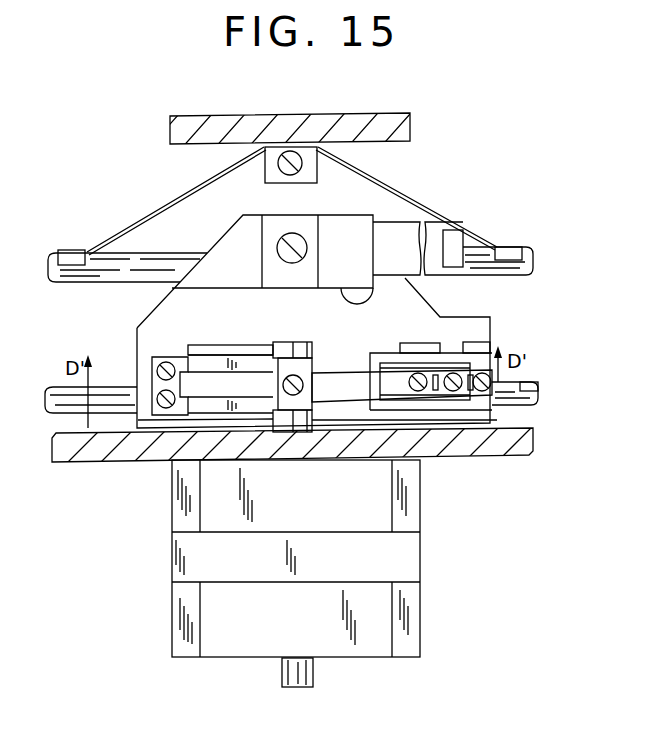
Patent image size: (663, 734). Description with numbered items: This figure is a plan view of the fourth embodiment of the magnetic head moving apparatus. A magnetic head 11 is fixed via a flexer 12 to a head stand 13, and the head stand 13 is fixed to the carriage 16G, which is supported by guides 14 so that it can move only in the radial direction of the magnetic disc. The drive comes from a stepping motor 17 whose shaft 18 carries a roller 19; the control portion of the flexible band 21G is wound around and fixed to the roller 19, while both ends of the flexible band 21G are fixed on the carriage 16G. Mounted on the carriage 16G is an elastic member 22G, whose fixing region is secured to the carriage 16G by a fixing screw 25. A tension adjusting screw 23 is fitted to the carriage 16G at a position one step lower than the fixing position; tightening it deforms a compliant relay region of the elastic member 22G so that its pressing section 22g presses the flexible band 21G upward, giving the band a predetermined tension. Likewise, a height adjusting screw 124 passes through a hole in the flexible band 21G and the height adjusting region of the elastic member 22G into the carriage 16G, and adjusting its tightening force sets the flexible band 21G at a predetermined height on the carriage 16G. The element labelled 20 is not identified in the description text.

The magnetic head 11 is at (453, 237).
The flexer 12 is at (402, 230).
The head stand 13 is at (335, 223).
The guides 14 is at (137, 253).
The carriage 16G is at (147, 370).
The stepping motor 17 is at (238, 645).
The shaft 18 is at (310, 672).
The roller 19 is at (292, 432).
The upper arm 20 is at (217, 352).
The flexible band 21G is at (212, 407).
The elastic member 22G is at (402, 343).
The pressing section 22g is at (387, 407).
The tension adjusting screw 23 is at (482, 393).
The fixing screw 25 is at (452, 393).
The height adjusting screw 124 is at (417, 392).